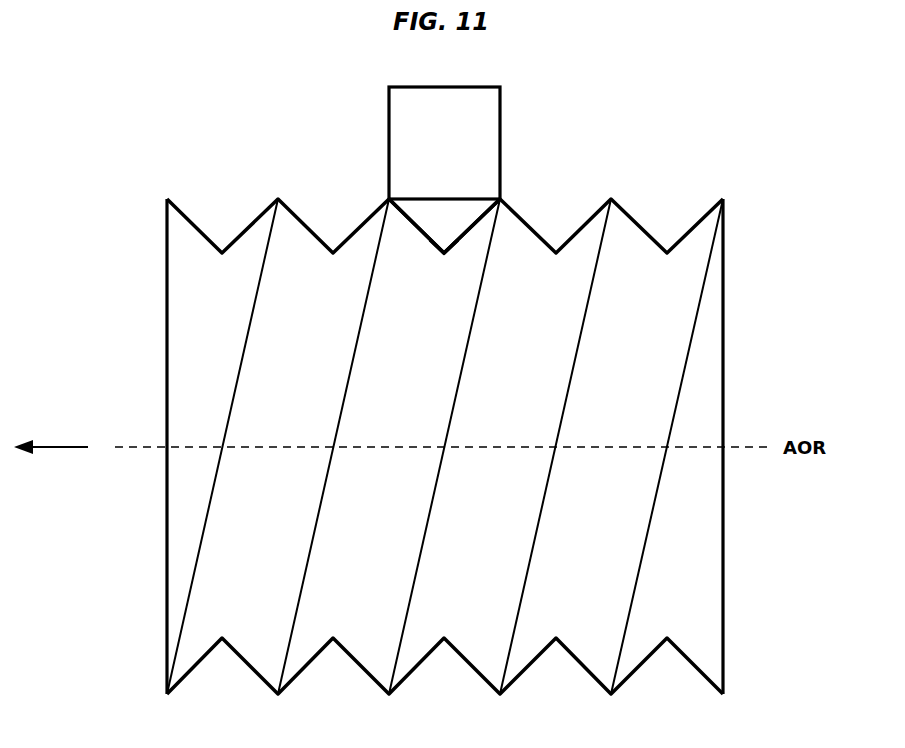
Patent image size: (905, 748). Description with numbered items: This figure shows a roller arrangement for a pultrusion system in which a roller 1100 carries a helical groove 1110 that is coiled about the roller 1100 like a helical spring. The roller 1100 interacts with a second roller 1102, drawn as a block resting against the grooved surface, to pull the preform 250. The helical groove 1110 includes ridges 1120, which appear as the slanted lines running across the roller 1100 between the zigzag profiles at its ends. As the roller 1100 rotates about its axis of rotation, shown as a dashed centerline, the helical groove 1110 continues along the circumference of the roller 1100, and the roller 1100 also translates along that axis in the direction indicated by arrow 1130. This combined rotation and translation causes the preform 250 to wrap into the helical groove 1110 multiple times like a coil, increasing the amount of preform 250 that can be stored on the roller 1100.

The roller 1100 is at (725, 322).
The roller 1102 is at (486, 103).
The preform 250 is at (475, 211).
The helical groove 1110 is at (424, 256).
The ridges 1120 is at (580, 363).
The arrow 1130 is at (60, 446).